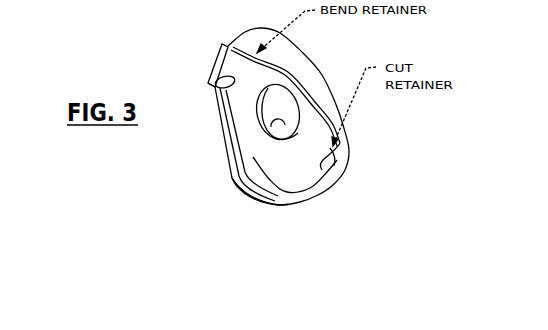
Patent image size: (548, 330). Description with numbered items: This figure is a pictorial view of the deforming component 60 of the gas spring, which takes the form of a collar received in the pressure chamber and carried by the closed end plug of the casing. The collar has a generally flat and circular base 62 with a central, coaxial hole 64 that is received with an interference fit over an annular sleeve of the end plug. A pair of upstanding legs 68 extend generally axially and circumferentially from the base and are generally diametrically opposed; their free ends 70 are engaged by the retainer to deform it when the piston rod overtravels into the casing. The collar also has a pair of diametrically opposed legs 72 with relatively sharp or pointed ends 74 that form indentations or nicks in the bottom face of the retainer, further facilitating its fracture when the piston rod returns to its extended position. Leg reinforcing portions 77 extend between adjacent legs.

The deforming component 60 is at (215, 44).
The base 62 is at (323, 192).
The hole 64 is at (277, 127).
The legs 68 is at (276, 183).
The free ends 70 is at (256, 62).
The legs 72 is at (213, 83).
The pointed ends 74 is at (212, 87).
The leg reinforcing portions 77 is at (222, 148).